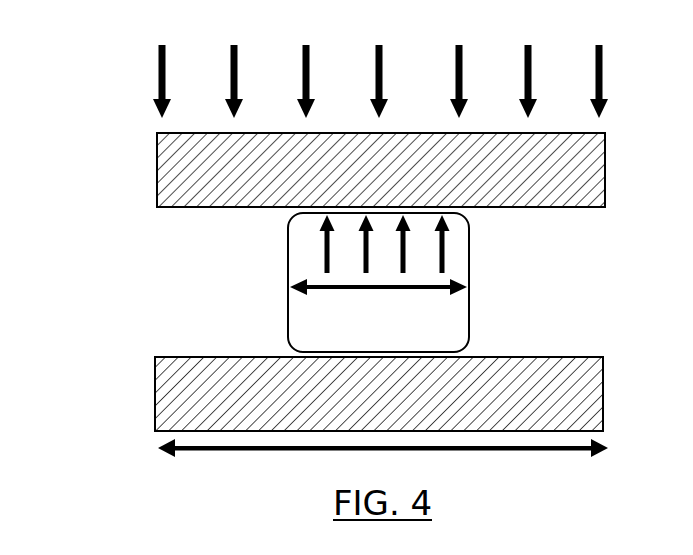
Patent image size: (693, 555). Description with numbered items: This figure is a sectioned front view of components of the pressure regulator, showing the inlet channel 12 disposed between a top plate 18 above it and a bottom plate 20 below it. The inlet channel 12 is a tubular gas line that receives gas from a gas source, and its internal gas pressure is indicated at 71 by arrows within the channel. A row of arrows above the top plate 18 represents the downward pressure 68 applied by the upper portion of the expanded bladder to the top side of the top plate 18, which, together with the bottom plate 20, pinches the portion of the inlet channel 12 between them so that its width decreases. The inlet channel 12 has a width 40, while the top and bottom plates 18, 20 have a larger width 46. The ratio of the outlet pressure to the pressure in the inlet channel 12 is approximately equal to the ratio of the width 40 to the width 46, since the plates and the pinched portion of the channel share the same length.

The inlet channel 12 is at (288, 241).
The top plate 18 is at (157, 160).
The bottom plate 20 is at (155, 388).
The width of the inlet channel 40 is at (378, 298).
The width of the top and bottom plates 46 is at (383, 458).
The downward pressure 68 is at (165, 80).
The pressure within the inlet channel 71 is at (403, 253).